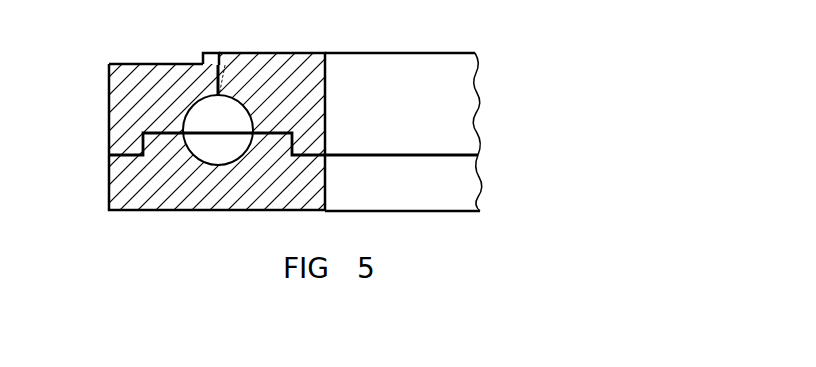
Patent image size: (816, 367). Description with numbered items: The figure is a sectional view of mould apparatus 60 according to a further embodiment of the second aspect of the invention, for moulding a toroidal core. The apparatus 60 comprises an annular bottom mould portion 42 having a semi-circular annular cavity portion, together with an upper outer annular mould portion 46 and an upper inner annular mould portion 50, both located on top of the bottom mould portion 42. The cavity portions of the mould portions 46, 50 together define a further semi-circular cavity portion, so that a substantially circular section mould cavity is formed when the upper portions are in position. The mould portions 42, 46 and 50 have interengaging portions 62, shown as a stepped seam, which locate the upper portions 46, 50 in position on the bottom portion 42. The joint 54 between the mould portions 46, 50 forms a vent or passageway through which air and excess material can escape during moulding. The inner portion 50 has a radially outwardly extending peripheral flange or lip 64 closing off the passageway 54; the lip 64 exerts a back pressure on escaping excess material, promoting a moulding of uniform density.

The annular bottom mould portion 42 is at (174, 198).
The upper outer annular mould portion 46 is at (125, 97).
The upper inner annular mould portion 50 is at (295, 65).
The joint 54 is at (220, 78).
The mould apparatus 60 is at (532, 24).
The interengaging portions 62 is at (155, 150).
The peripheral flange or lip 64 is at (213, 55).